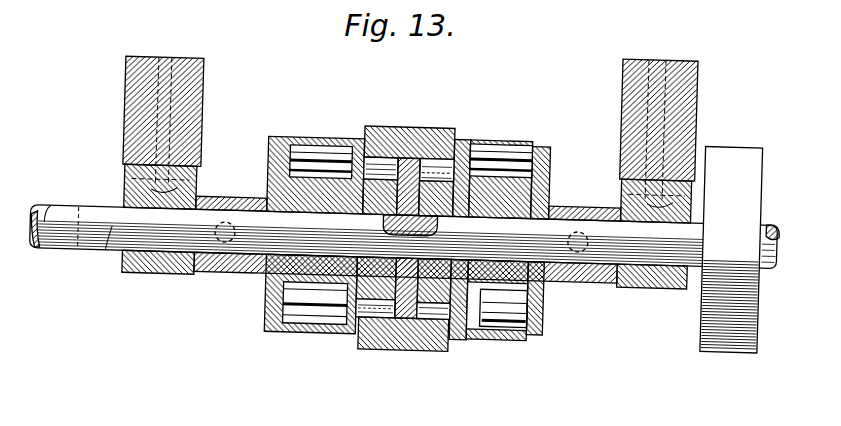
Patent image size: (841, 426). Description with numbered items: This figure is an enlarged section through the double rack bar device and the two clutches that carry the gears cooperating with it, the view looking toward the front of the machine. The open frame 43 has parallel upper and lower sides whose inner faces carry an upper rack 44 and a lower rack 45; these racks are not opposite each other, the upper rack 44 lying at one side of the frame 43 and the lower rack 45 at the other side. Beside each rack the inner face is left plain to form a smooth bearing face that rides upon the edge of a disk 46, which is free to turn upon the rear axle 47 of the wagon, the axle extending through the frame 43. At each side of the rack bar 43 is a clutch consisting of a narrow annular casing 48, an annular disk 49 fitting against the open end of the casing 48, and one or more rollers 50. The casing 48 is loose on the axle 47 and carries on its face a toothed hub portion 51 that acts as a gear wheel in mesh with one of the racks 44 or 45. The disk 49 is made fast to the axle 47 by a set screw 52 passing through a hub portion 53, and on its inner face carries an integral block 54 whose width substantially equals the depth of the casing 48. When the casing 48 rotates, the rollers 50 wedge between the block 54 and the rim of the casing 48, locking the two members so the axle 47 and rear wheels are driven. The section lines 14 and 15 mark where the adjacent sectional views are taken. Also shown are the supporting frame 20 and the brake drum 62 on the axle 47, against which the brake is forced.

The section line 14 14 is at (430, 111).
The section line 15 15 is at (309, 111).
The supporting frame 20 is at (189, 86).
The open frame 43 is at (408, 350).
The upper rack 44 is at (430, 166).
The lower rack 45 is at (382, 311).
The disk 46 is at (401, 170).
The rear axle 47 is at (655, 245).
The annular casing 48 is at (307, 137).
The annular disk 49 is at (535, 156).
The rollers 50 is at (516, 340).
The hub portion 51 is at (491, 145).
The set screw 52 is at (231, 228).
The hub portion 53 is at (223, 278).
The block 54 is at (479, 285).
The brake drum 62 is at (725, 139).